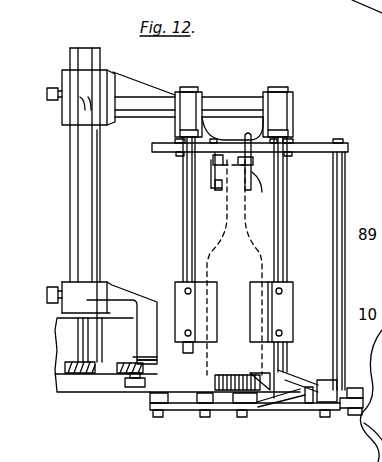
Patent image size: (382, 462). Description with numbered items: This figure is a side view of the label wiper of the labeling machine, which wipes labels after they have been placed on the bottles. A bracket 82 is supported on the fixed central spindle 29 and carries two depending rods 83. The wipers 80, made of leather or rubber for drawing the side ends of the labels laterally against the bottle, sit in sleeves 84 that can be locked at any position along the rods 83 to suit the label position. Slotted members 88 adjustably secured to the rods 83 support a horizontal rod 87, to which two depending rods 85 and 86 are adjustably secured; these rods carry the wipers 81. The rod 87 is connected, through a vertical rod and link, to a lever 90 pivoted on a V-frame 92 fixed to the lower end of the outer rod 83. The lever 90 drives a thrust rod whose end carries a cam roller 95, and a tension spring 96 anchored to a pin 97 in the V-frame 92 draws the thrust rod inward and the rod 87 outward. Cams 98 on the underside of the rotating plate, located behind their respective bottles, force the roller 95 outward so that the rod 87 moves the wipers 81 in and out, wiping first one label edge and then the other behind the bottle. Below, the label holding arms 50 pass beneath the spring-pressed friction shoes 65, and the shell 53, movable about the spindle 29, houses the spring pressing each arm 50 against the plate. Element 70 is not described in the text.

The spindle 29 is at (91, 44).
The bracket 82 is at (146, 91).
The horizontal rod 87 is at (163, 144).
The slotted members 88 is at (307, 135).
The depending rod 85 is at (210, 170).
The wipers 81 is at (218, 189).
The depending rod 86 is at (250, 190).
The depending rods 83 is at (185, 235).
The wipers 80 is at (262, 218).
The clamp block and arm 70 is at (108, 296).
The sleeves 84 is at (175, 286).
The shell 53 is at (63, 345).
The friction shoes 65 is at (150, 363).
The label holding arms 50 is at (82, 374).
The cams 98 is at (170, 403).
The cam roller 95 is at (205, 403).
The pin 97 is at (240, 410).
The tension spring 96 is at (294, 408).
The V-frame 92 is at (298, 378).
The lever 90 is at (354, 391).